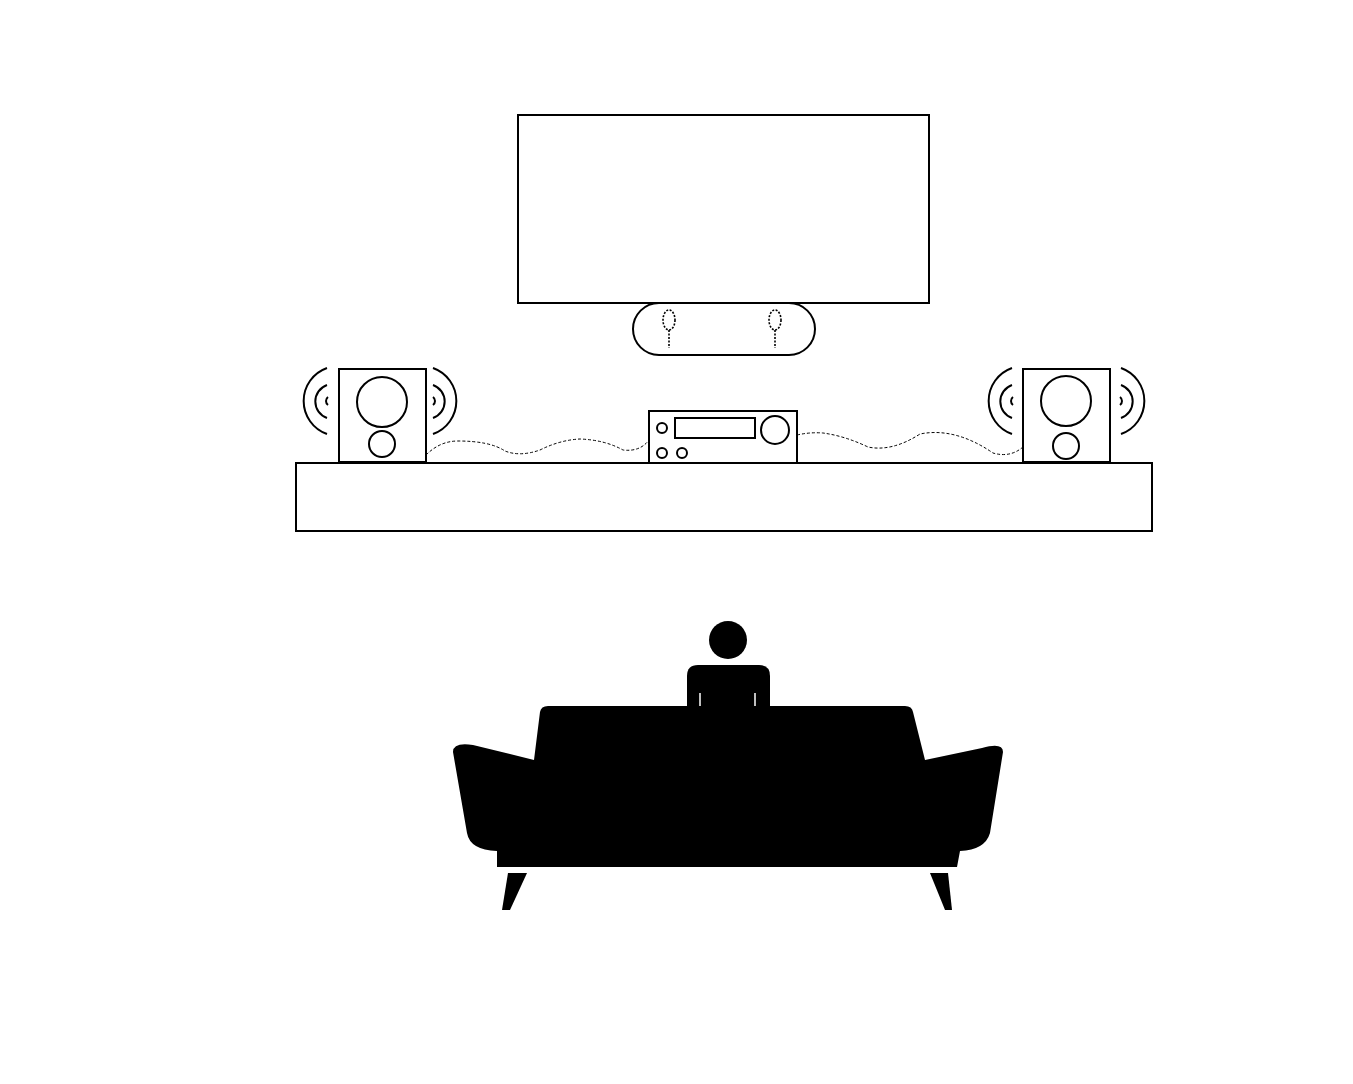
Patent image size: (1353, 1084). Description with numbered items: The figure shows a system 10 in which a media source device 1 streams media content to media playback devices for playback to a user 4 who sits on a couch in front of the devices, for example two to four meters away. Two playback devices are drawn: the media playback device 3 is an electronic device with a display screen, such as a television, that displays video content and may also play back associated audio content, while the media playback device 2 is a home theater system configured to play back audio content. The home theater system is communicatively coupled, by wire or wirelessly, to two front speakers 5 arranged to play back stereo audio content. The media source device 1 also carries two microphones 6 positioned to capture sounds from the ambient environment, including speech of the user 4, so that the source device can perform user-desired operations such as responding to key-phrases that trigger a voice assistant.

The system 10 is at (200, 127).
The media playback device 3 is at (468, 158).
The media source device 1 is at (735, 352).
The microphones 6 is at (650, 332).
The speakers 5 is at (1179, 417).
The media playback device 2 is at (788, 470).
The user 4 is at (667, 647).